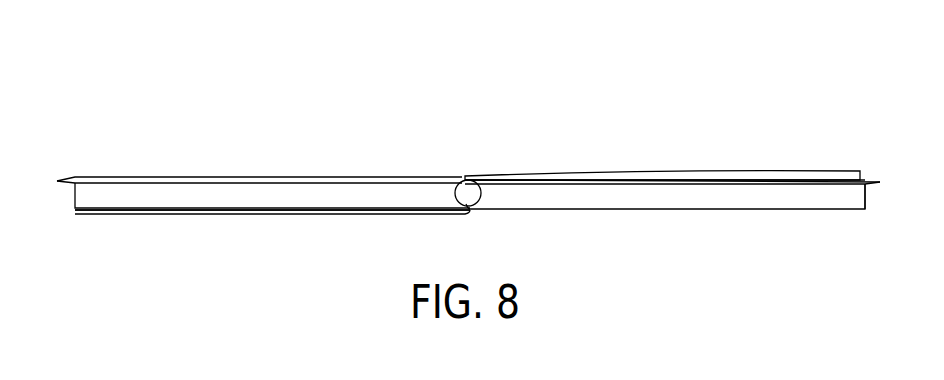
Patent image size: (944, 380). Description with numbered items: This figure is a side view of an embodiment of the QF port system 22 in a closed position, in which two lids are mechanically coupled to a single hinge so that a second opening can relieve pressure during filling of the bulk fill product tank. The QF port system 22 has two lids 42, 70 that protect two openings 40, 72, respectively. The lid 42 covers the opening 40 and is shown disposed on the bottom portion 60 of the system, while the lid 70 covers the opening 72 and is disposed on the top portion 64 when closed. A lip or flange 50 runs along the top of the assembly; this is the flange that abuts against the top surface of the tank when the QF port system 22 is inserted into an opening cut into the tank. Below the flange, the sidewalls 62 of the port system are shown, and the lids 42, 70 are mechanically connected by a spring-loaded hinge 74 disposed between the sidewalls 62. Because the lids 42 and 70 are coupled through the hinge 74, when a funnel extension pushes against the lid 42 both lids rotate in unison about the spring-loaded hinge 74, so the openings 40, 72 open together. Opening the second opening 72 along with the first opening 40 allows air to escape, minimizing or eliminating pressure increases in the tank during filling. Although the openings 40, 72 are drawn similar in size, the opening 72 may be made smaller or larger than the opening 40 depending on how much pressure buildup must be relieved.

The QF port system 22 is at (762, 52).
The opening 40 is at (250, 140).
The lid 42 is at (157, 213).
The lip or flange 50 is at (66, 181).
The bottom section 60 is at (105, 214).
The sidewall 62 is at (262, 204).
The top section 64 is at (795, 182).
The lid 70 is at (710, 172).
The opening 72 is at (658, 140).
The spring-loaded hinge 74 is at (457, 193).